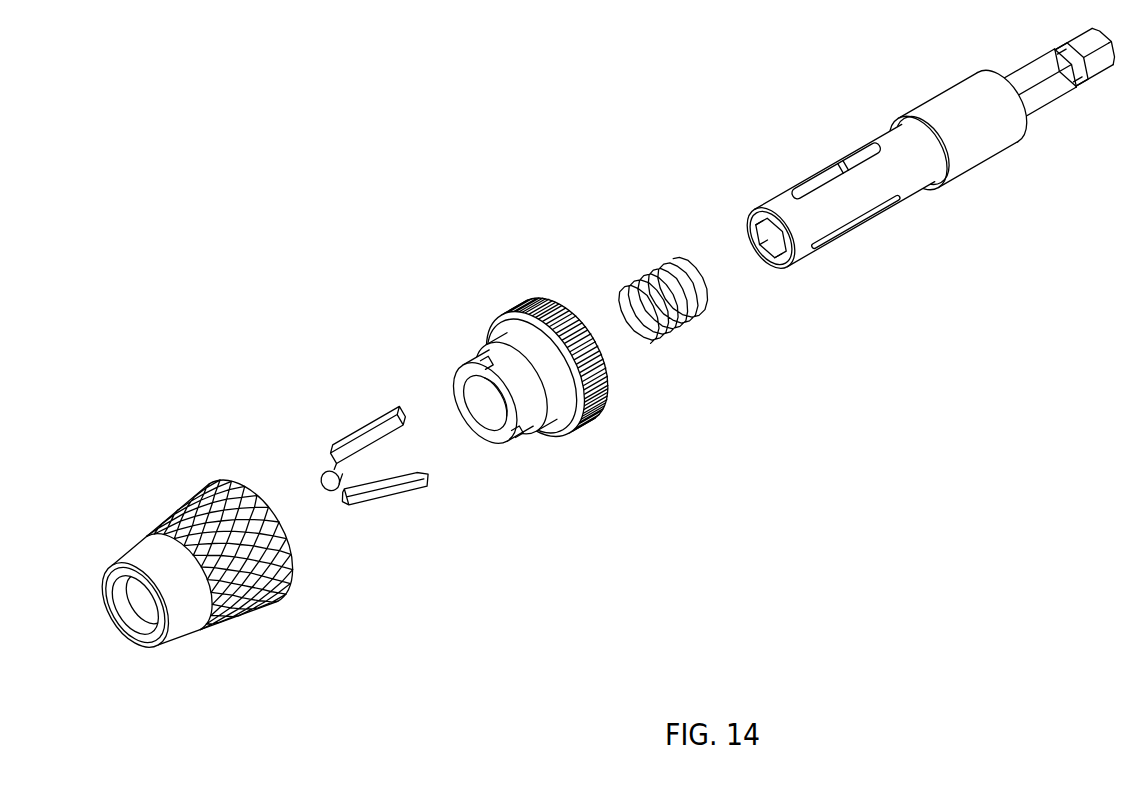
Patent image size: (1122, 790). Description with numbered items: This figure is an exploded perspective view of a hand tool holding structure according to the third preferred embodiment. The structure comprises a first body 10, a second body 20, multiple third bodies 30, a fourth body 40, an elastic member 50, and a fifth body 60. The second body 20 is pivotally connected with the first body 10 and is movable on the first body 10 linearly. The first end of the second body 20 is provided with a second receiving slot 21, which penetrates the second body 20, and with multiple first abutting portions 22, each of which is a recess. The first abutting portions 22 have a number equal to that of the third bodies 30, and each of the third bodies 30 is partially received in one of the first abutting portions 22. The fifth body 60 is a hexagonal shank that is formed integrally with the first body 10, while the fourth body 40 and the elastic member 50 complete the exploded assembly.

The first body 10 is at (973, 170).
The second body 20 is at (570, 438).
The second receiving slot 21 is at (462, 388).
The first abutting portion 22 is at (478, 370).
The third body 30 is at (363, 433).
The fourth body 40 is at (143, 542).
The elastic member 50 is at (685, 335).
The fifth body 60 is at (1050, 100).